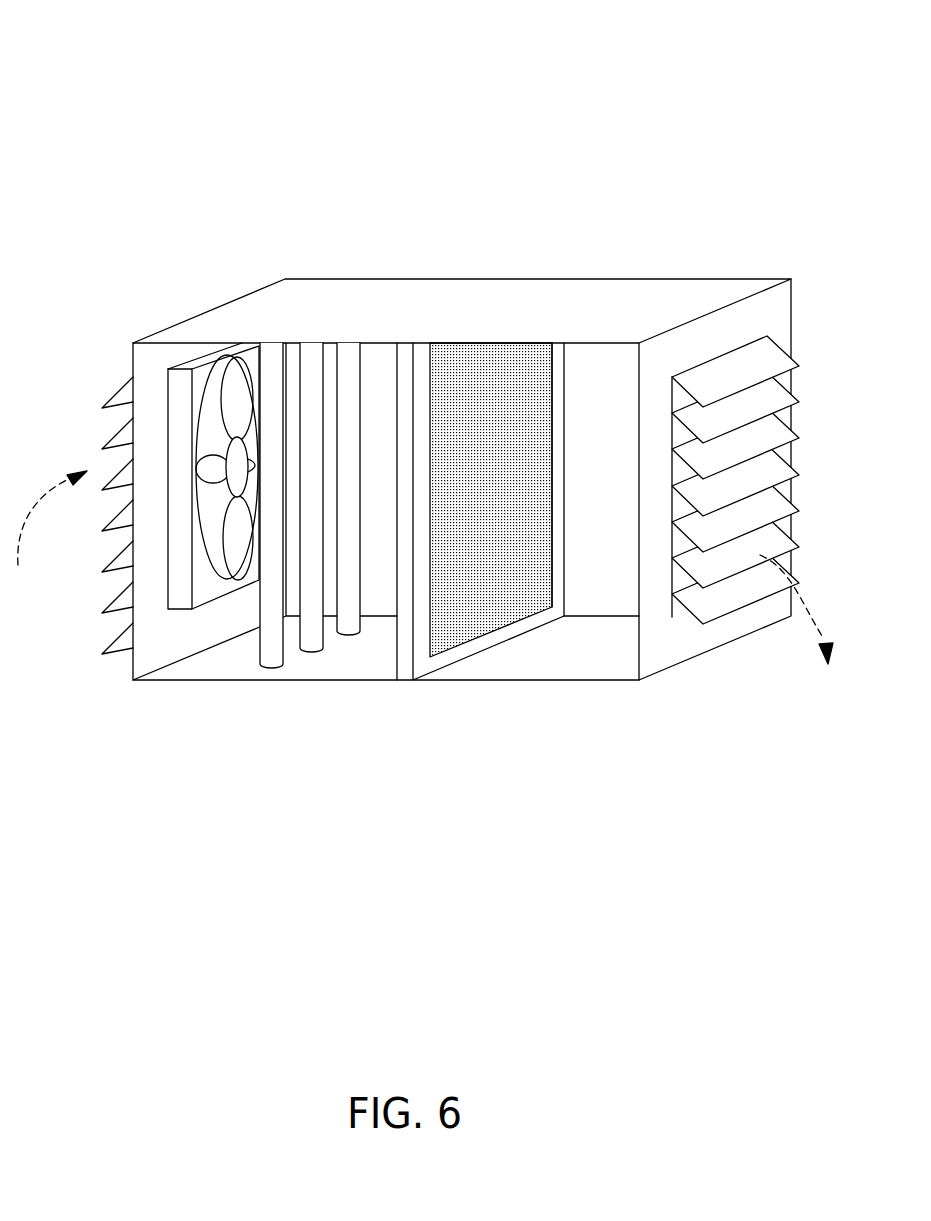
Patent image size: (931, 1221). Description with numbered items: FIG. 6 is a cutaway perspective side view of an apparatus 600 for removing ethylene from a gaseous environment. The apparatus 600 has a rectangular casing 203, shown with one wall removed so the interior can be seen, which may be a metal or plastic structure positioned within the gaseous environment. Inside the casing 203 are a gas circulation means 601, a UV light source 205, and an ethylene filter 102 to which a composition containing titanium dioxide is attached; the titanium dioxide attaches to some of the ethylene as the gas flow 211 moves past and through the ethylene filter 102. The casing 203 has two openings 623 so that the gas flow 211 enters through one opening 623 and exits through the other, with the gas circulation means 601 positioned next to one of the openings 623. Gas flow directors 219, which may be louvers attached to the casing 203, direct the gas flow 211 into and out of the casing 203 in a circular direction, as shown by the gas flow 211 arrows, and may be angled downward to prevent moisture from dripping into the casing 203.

The apparatus 600 is at (184, 79).
The casing 203 is at (505, 315).
The gas circulation means 601 is at (180, 398).
The opening 623 is at (220, 507).
The UV light source 205 is at (256, 642).
The ethylene filter 102 is at (413, 658).
The gas flow director 219 is at (104, 651).
The gas flow 211 is at (42, 505).